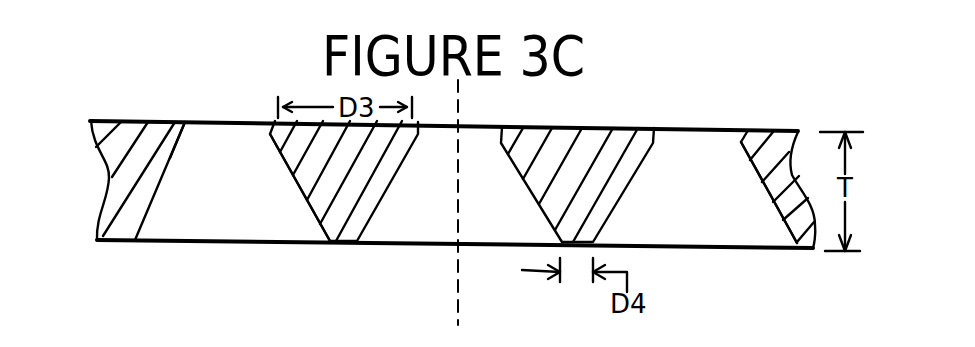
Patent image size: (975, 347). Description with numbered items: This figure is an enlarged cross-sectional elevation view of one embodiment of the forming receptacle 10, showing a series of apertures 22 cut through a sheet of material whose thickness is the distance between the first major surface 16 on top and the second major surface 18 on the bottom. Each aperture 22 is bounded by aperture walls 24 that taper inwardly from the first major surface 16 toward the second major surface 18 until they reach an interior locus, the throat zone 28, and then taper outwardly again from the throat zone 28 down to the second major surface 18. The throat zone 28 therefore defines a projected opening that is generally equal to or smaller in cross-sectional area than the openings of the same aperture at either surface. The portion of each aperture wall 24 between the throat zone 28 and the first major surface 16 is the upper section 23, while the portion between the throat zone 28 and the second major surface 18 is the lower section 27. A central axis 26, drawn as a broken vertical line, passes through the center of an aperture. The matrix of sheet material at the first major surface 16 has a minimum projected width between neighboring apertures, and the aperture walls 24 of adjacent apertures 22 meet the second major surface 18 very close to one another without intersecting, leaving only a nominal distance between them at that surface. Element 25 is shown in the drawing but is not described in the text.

The forming receptacle 10 is at (603, 108).
The first major surface 16 is at (148, 120).
The second major surface 18 is at (352, 242).
The aperture 22 is at (690, 165).
The upper section of aperture wall 23 is at (741, 138).
The aperture wall 24 is at (293, 185).
The tapered side edge 25 is at (648, 145).
The central axis 26 is at (460, 193).
The lower section of aperture wall 27 is at (780, 232).
The throat zone 28 is at (188, 132).